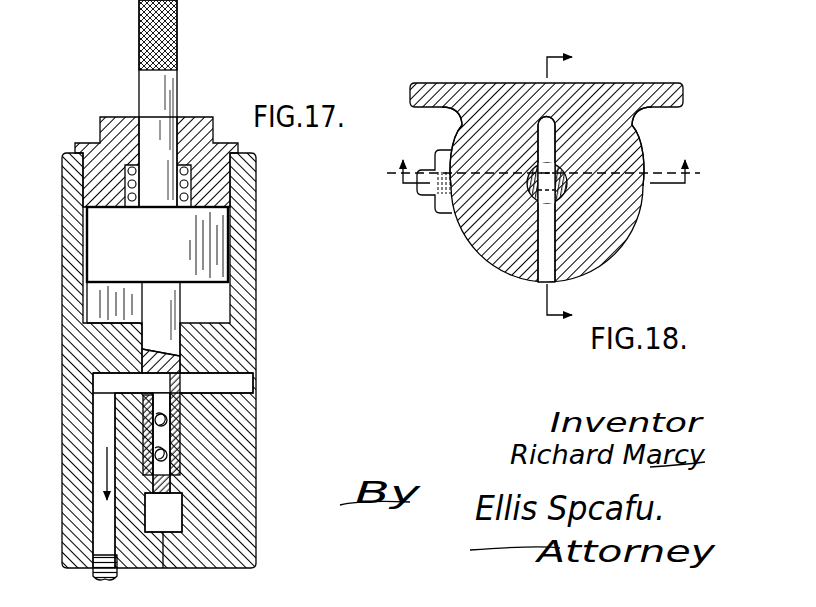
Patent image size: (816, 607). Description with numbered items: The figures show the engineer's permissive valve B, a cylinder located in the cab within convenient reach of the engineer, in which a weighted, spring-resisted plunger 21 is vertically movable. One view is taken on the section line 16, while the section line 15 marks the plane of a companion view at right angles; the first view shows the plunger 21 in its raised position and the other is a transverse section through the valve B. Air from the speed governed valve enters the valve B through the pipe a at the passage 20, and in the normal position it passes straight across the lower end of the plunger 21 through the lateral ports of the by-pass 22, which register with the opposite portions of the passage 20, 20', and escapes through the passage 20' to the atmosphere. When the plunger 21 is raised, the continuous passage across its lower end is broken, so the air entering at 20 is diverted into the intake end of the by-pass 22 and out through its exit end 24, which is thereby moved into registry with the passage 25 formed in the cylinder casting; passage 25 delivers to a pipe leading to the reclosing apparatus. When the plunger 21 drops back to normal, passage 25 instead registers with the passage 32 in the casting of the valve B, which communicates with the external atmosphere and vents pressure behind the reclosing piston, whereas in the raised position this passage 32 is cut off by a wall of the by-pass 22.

In FIG. 17, the plunger 21 is at (160, 90).
In FIG. 18, the plunger 21 is at (565, 183).
In FIG. 17, the exit end of the by-pass 24 is at (153, 385).
In FIG. 17, the passage 25 is at (105, 420).
In FIG. 18, the passage 25 is at (545, 120).
In FIG. 17, the by-pass 22 is at (158, 447).
In FIG. 17, the passage 32 is at (235, 382).
In FIG. 18, the passage 32 is at (555, 281).
In FIG. 17, the passage 20' is at (246, 424).
In FIG. 18, the passage 20' is at (655, 146).
In FIG. 18, the engineer's permissive valve B is at (480, 245).
In FIG. 18, the passage 20 is at (444, 146).
In FIG. 18, the pipe a is at (425, 195).
In FIG. 18, the section line 15- 15 is at (559, 157).
In FIG. 18, the section line 16- 16 is at (583, 180).